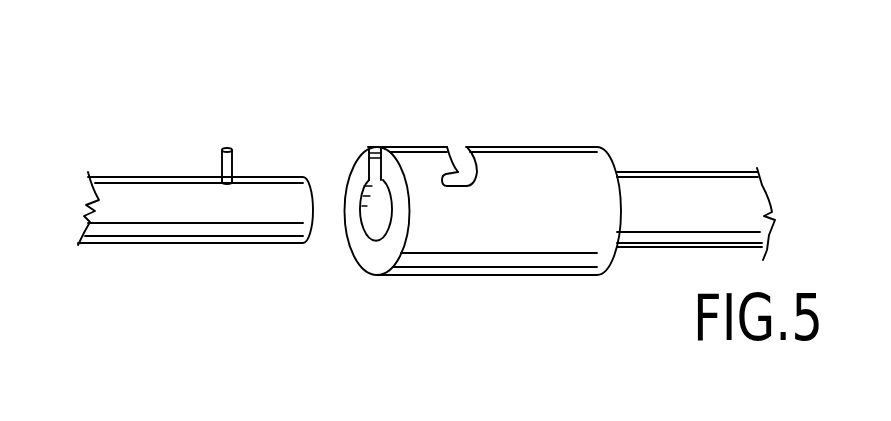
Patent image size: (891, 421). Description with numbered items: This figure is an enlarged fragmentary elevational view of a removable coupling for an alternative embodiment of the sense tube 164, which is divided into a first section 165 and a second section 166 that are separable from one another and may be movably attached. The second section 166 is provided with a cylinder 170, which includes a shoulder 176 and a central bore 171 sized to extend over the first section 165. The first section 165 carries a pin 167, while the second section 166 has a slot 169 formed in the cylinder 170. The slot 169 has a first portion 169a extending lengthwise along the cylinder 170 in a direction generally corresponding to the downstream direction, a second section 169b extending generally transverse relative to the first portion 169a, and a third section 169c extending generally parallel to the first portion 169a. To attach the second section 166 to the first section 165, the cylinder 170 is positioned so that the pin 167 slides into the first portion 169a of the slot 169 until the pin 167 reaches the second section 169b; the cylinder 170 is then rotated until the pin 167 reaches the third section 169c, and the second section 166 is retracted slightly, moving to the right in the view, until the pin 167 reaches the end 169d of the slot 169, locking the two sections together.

The sense tube 164 is at (355, 95).
The first section 165 is at (123, 177).
The second section 166 is at (643, 170).
The pin 167 is at (233, 158).
The slot 169 is at (462, 147).
The first portion of the slot 169a is at (375, 148).
The second section of the slot 169b is at (467, 163).
The third section of the slot 169c is at (470, 186).
The end of the slot 169d is at (445, 184).
The cylinder 170 is at (513, 275).
The central bore 171 is at (378, 258).
The shoulder 176 is at (380, 266).